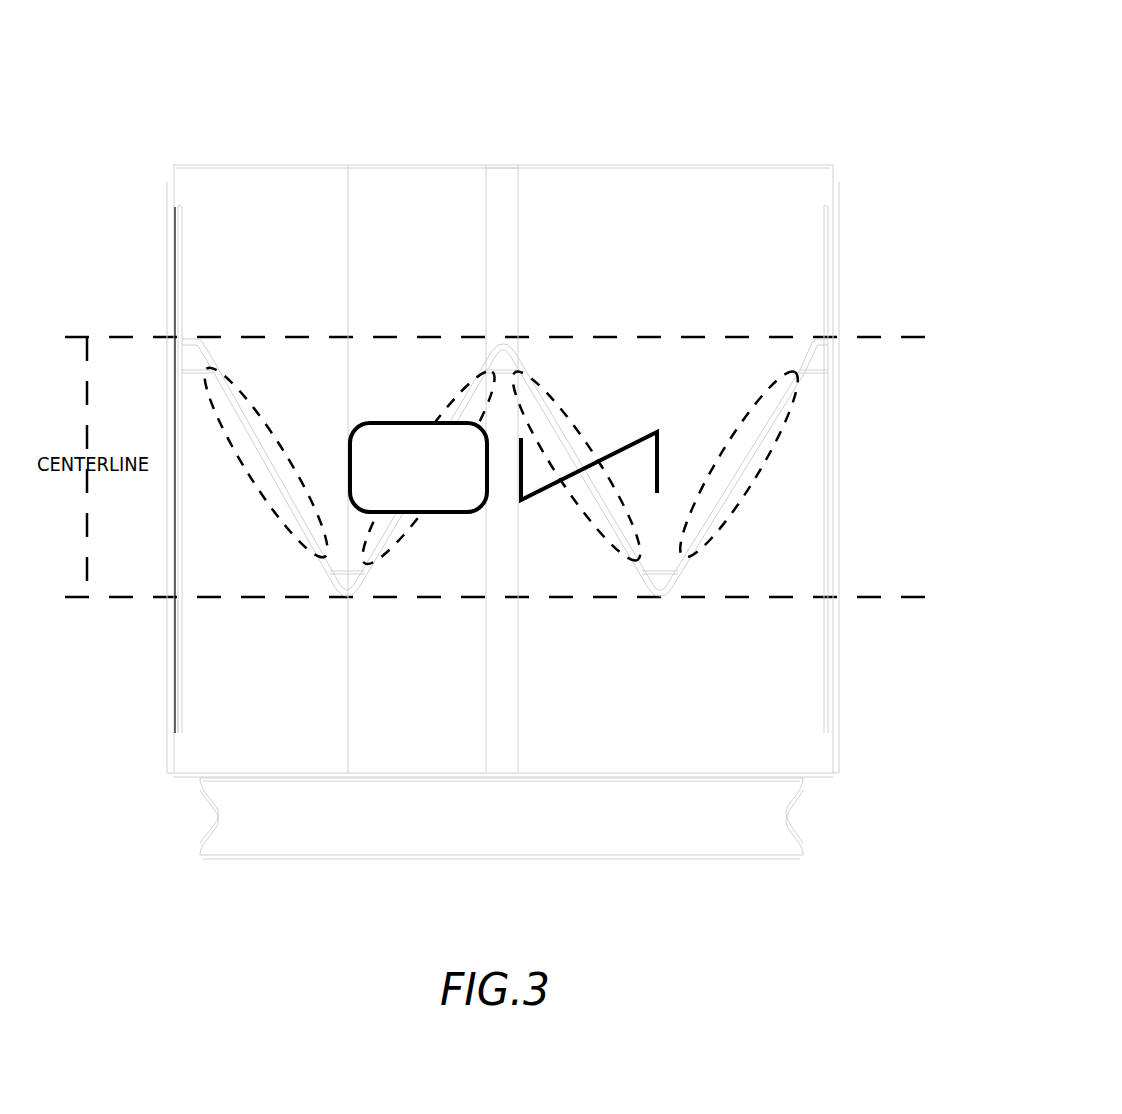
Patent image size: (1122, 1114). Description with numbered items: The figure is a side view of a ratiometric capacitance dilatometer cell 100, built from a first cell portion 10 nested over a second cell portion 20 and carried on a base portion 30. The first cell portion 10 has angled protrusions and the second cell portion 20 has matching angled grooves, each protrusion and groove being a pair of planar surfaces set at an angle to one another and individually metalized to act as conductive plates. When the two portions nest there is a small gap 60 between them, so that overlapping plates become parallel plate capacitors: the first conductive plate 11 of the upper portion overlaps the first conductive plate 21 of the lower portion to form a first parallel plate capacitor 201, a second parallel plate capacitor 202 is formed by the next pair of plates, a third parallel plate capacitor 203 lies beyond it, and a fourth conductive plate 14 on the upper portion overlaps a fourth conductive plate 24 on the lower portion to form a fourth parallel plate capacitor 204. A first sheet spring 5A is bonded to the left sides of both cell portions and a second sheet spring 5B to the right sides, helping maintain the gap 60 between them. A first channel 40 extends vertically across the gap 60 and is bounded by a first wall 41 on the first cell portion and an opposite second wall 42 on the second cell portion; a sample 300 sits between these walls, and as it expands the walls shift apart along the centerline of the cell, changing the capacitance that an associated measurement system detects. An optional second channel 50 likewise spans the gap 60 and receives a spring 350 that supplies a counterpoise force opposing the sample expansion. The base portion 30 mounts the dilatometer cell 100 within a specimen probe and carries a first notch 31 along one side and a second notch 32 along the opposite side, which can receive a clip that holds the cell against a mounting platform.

The ratiometric capacitance dilatometer cell 100 is at (705, 78).
The first cell portion 10 is at (264, 221).
The second cell portion 20 is at (247, 714).
The base portion 30 is at (310, 827).
The first notch 31 is at (218, 817).
The second notch 32 is at (787, 817).
The first channel 40 is at (417, 441).
The first wall 41 is at (350, 408).
The second wall 42 is at (485, 520).
The second channel 50 is at (585, 175).
The first sheet spring 5A is at (167, 251).
The second sheet spring 5B is at (837, 258).
The gap 60 is at (190, 357).
The first conductive plate of the first cell portion 11 is at (282, 483).
The first conductive plate of the second cell portion 21 is at (260, 470).
The fourth conductive plate of the first cell portion 14 is at (735, 457).
The fourth conductive plate of the second cell portion 24 is at (757, 453).
The first parallel plate capacitor 201 is at (252, 410).
The second parallel plate capacitor 202 is at (395, 547).
The third parallel plate capacitor 203 is at (567, 408).
The fourth parallel plate capacitor 204 is at (725, 527).
The sample 300 is at (401, 482).
The spring 350 is at (540, 499).